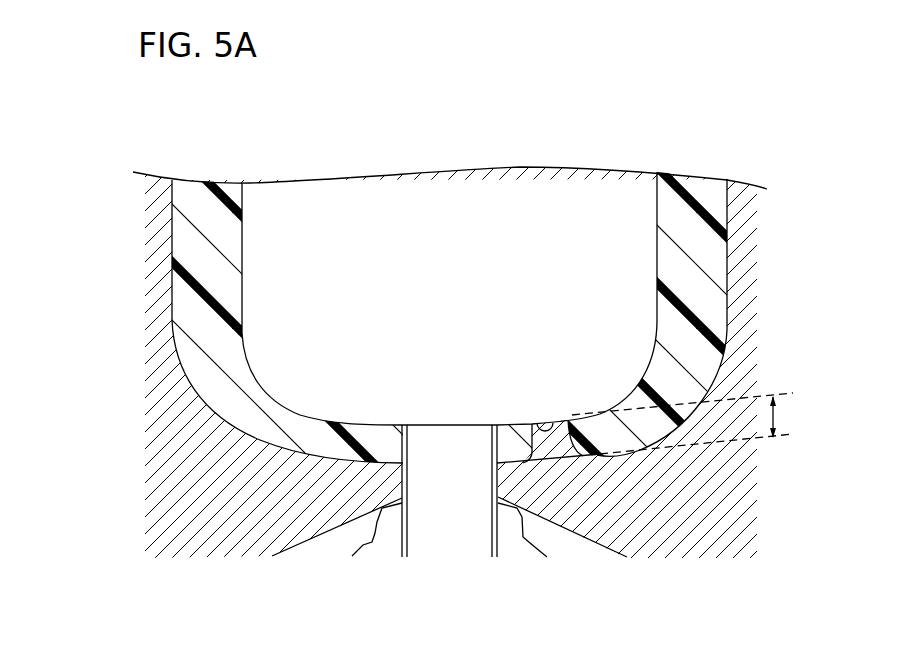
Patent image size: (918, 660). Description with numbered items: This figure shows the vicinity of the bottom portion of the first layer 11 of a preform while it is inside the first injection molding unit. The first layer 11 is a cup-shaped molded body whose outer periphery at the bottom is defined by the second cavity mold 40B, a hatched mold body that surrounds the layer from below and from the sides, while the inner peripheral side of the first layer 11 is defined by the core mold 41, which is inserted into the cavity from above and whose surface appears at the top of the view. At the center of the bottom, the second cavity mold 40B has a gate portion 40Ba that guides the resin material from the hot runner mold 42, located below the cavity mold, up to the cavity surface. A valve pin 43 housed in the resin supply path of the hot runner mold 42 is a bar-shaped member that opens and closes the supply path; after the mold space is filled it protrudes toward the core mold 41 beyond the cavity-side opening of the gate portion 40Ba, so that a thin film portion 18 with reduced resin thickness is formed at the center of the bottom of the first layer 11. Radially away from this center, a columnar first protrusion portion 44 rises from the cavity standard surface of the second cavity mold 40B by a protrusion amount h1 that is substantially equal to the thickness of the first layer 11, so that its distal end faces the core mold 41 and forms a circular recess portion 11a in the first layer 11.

The first layer 11 is at (735, 267).
The recess portion 11a is at (538, 422).
The thin film portion 18 is at (429, 425).
The second cavity mold 40B is at (125, 423).
The gate portion 40Ba is at (493, 478).
The core mold 41 is at (290, 172).
The hot runner mold 42 is at (325, 545).
The valve pin 43 is at (418, 477).
The first protrusion portion 44 is at (552, 445).
The protrusion amount h1 is at (777, 413).